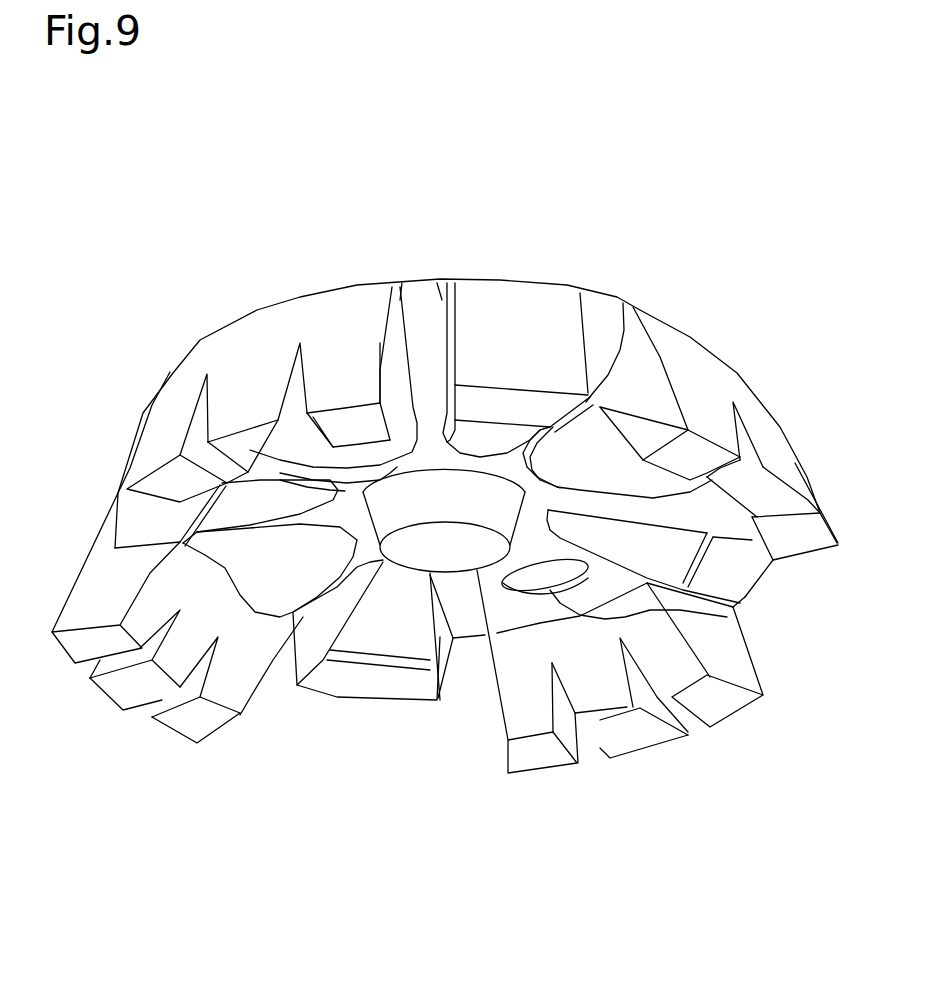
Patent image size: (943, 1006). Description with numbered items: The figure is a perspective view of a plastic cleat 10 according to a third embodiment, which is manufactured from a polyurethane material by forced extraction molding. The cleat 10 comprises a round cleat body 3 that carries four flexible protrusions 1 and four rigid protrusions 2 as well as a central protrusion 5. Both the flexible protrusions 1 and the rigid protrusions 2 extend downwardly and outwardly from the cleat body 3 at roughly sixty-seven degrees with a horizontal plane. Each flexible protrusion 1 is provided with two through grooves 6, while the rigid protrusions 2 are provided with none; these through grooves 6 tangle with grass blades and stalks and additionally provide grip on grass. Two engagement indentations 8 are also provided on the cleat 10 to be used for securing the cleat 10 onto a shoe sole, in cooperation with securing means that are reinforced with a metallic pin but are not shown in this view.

The flexible protrusion 1 is at (710, 380).
The rigid protrusion 2 is at (524, 292).
The cleat body 3 is at (420, 294).
The central protrusion 5 is at (455, 550).
The through groove 6 is at (594, 748).
The engagement indentation 8 is at (695, 618).
The cleat 10 is at (678, 280).